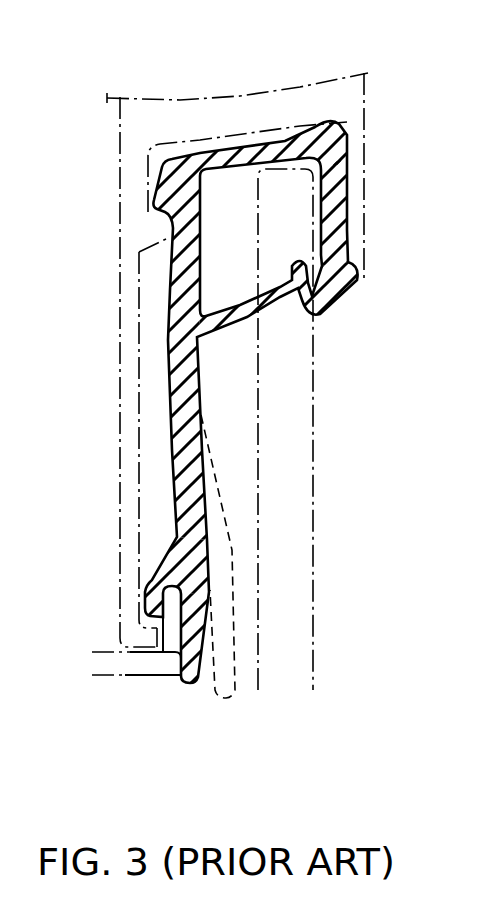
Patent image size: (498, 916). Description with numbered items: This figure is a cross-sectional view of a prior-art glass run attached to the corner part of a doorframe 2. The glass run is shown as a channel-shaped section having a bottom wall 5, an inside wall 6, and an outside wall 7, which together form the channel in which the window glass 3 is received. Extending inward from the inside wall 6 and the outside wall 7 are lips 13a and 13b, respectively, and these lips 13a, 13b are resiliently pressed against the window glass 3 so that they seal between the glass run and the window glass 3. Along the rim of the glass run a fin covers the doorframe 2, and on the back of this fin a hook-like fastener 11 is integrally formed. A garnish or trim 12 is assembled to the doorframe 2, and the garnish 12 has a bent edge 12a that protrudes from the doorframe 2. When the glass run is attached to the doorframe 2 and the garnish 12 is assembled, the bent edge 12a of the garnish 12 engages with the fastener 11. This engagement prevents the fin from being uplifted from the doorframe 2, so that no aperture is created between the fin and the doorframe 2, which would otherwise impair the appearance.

The doorframe 2 is at (121, 372).
The window glass 3 is at (306, 429).
The bottom wall 5 is at (250, 138).
The inside wall 6 is at (142, 372).
The outside wall 7 is at (365, 213).
The hook-like fastener 11 is at (137, 577).
The garnish 12 is at (129, 673).
The bent edge 12a is at (196, 662).
The lip 13a is at (254, 323).
The lip 13b is at (359, 299).